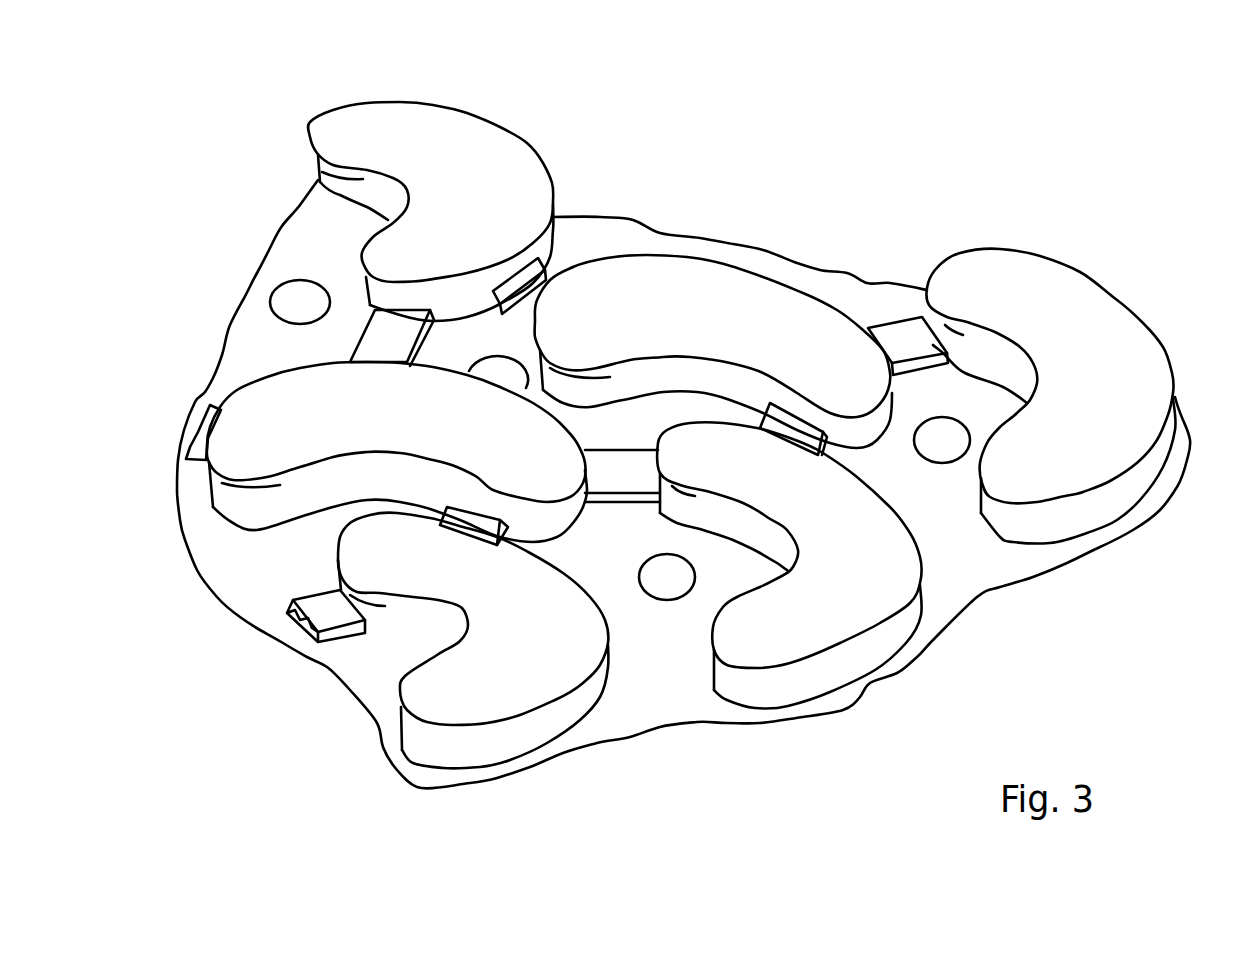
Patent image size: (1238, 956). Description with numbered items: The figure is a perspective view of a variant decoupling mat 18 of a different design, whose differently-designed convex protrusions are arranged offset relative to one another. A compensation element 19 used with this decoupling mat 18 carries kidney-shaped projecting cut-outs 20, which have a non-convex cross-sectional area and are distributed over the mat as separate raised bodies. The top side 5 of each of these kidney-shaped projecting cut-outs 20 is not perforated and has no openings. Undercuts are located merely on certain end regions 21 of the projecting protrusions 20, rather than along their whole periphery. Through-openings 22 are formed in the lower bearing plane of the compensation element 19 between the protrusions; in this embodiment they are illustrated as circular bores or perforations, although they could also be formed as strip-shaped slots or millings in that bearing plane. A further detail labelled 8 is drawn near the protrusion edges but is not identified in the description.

The top side 5 is at (460, 141).
The rounded edge 8 is at (333, 169).
The decoupling mat 18 is at (893, 207).
The compensation element 19 is at (819, 283).
The kidney-shaped projecting cut-outs 20 is at (517, 167).
The end regions 21 is at (301, 131).
The through-openings 22 is at (301, 302).